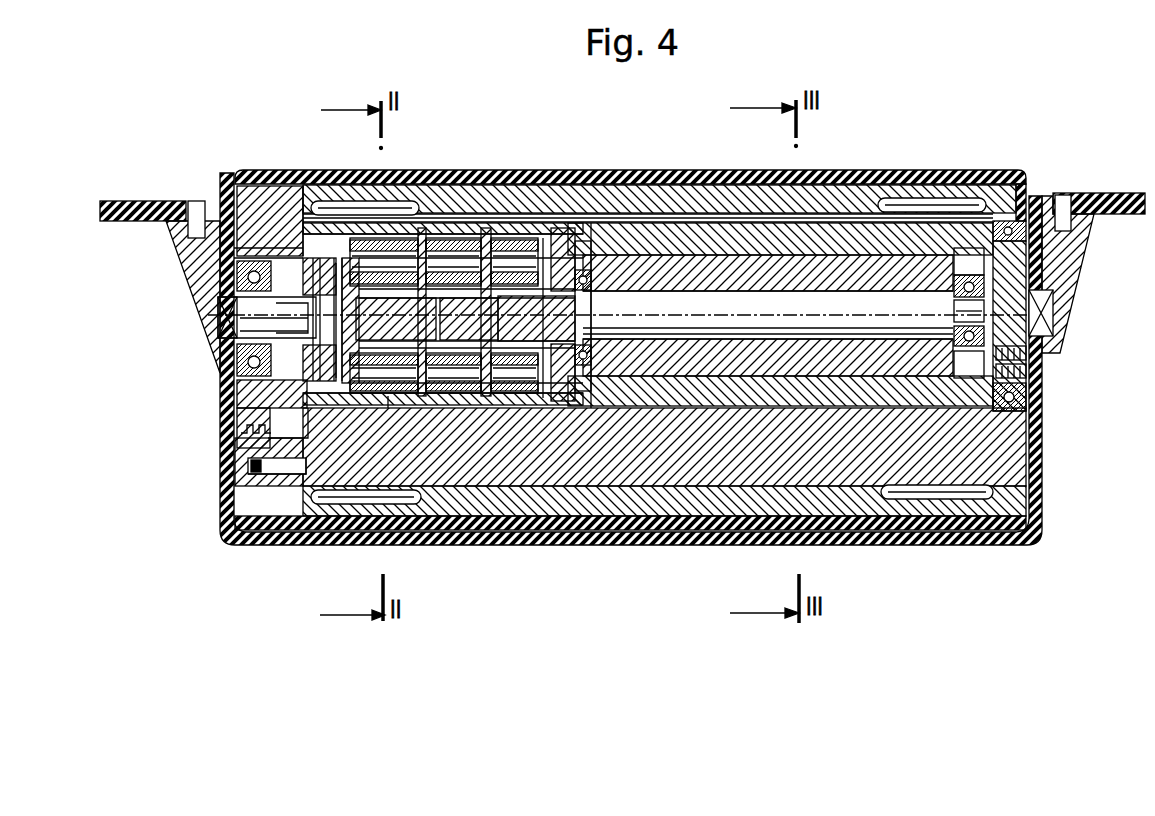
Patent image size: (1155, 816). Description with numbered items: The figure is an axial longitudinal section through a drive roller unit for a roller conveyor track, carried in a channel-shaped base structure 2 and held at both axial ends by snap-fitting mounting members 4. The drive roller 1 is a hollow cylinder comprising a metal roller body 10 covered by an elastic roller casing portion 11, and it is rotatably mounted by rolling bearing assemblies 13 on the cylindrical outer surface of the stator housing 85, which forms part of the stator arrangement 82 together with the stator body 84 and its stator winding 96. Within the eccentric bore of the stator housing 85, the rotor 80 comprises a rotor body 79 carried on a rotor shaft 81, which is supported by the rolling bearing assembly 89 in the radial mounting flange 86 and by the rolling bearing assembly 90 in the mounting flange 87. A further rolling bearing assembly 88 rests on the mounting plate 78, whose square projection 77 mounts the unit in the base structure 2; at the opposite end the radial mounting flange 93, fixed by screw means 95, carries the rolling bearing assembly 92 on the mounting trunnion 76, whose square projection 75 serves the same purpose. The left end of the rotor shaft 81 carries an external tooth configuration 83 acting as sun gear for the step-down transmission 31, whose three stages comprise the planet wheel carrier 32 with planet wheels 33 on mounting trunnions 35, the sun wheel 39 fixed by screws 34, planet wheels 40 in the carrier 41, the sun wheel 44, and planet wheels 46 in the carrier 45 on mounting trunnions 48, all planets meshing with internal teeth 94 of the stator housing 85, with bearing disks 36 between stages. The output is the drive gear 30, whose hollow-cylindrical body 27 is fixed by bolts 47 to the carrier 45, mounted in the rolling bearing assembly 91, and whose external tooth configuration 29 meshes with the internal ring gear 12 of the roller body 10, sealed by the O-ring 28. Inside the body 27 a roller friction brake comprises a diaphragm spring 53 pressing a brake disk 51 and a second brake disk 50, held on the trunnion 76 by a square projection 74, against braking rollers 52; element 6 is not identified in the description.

The drive roller 1 is at (1003, 162).
The base structure 2 is at (120, 200).
The snap-fitting mounting member 4 is at (175, 250).
The clutch element 6 is at (1018, 352).
The roller body 10 is at (683, 192).
The roller casing portion 11 is at (652, 182).
The internal ring gear 12 is at (226, 240).
The rolling bearing assembly 13 is at (397, 240).
The hollow-cylindrical body 27 is at (292, 216).
The O-ring 28 is at (252, 252).
The external tooth configuration 29 is at (278, 202).
The drive gear 30 is at (371, 216).
The step-down transmission 31 is at (481, 216).
The planet wheel carrier 32 is at (561, 226).
The planet wheels 33 is at (521, 242).
The screws 34 is at (511, 392).
The mounting trunnions 35 is at (541, 232).
The bearing disk 36 is at (470, 392).
The sun wheel 39 is at (431, 392).
The planet wheels 40 is at (470, 252).
The carrier 41 is at (451, 397).
The sun wheel 44 is at (356, 402).
The carrier 45 is at (373, 397).
The planet wheels 46 is at (446, 247).
The bolts 47 is at (331, 432).
The mounting trunnions 48 is at (386, 242).
The second brake disk 50 is at (303, 236).
The brake disk 51 is at (250, 386).
The braking rollers 52 is at (346, 246).
The diaphragm spring 53 is at (272, 292).
The square projection 74 is at (240, 326).
The square projection 75 is at (226, 302).
The mounting trunnion 76 is at (252, 313).
The square projection 77 is at (1046, 300).
The mounting plate 78 is at (1046, 316).
The rotor body 79 is at (745, 252).
The rotor 80 is at (840, 236).
The rotor shaft 81 is at (803, 296).
The stator arrangement 82 is at (732, 482).
The external tooth configuration 83 is at (531, 402).
The stator body 84 is at (756, 392).
The stator housing 85 is at (726, 214).
The radial mounting flange 86 is at (1000, 270).
The mounting flange 87 is at (586, 216).
The rolling bearing assembly 88 is at (1018, 385).
The rolling bearing assembly 89 is at (936, 196).
The rolling bearing assembly 90 is at (581, 402).
The rolling bearing assembly 91 is at (326, 222).
The rolling bearing assembly 92 is at (243, 358).
The radial mounting flange 93 is at (240, 268).
The internal teeth 94 is at (501, 237).
The screw means 95 is at (242, 445).
The stator winding 96 is at (935, 487).